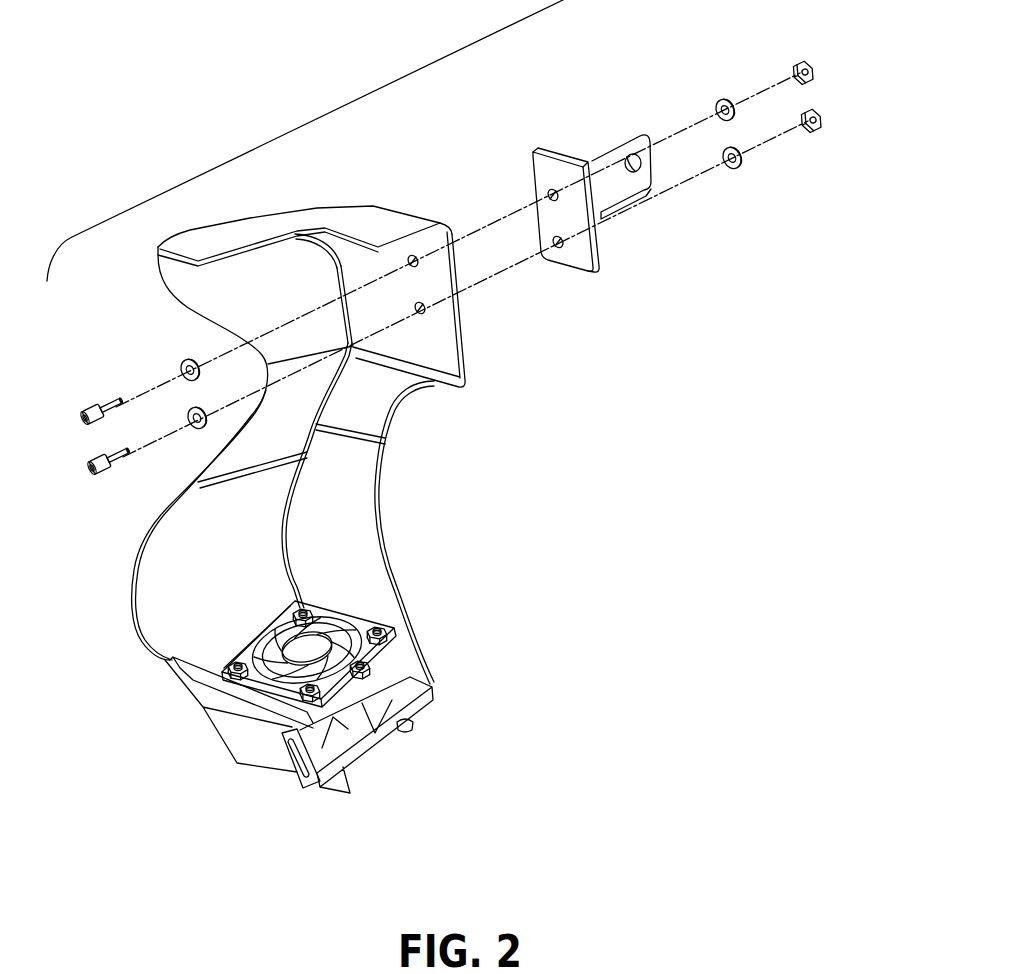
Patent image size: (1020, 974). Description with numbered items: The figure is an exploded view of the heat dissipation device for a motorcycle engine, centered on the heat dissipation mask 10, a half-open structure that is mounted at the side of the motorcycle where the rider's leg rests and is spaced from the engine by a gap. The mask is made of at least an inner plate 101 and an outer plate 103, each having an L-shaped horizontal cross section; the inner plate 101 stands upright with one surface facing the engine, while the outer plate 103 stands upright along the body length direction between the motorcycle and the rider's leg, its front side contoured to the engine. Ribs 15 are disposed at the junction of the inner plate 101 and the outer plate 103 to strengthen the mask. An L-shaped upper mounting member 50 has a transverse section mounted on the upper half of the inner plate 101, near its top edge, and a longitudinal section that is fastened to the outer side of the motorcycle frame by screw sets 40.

The heat dissipation mask 10 is at (319, 463).
The ribs 15 is at (357, 383).
The screw sets 40 is at (405, 75).
The upper mounting member 50 is at (622, 291).
The inner plate 101 is at (448, 353).
The outer plate 103 is at (203, 538).